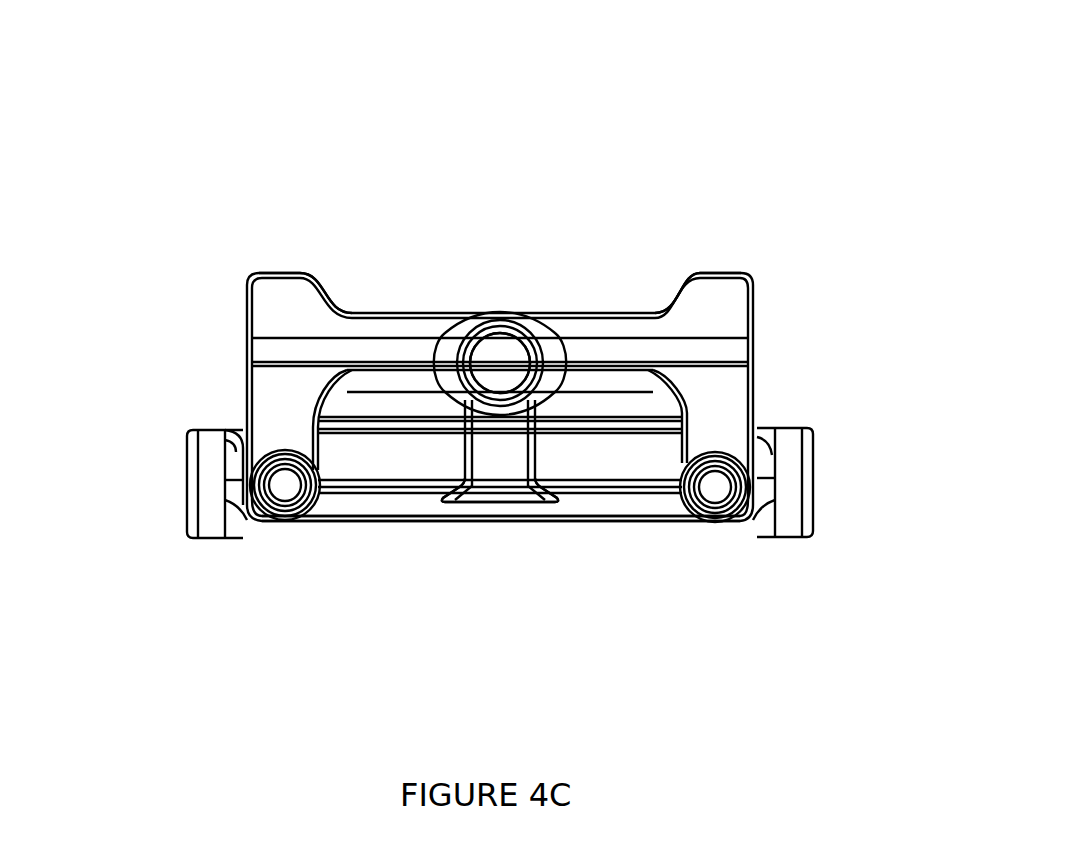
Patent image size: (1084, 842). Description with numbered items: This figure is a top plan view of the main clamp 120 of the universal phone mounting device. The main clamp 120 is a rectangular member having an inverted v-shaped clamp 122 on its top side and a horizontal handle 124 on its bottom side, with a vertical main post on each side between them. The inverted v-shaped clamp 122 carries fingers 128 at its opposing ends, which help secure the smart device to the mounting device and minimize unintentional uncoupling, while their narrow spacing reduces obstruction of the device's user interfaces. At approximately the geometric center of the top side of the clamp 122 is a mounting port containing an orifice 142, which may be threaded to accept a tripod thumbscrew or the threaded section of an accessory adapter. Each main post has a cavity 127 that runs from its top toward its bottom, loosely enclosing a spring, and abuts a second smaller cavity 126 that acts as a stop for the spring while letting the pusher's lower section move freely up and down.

The main clamp 120 is at (737, 95).
The inverted v-shaped clamp 122 is at (725, 360).
The horizontal handle 124 is at (595, 523).
The second smaller cavity 126 is at (298, 517).
The cavity 127 is at (243, 438).
The fingers 128 is at (290, 297).
The orifice 142 is at (528, 318).